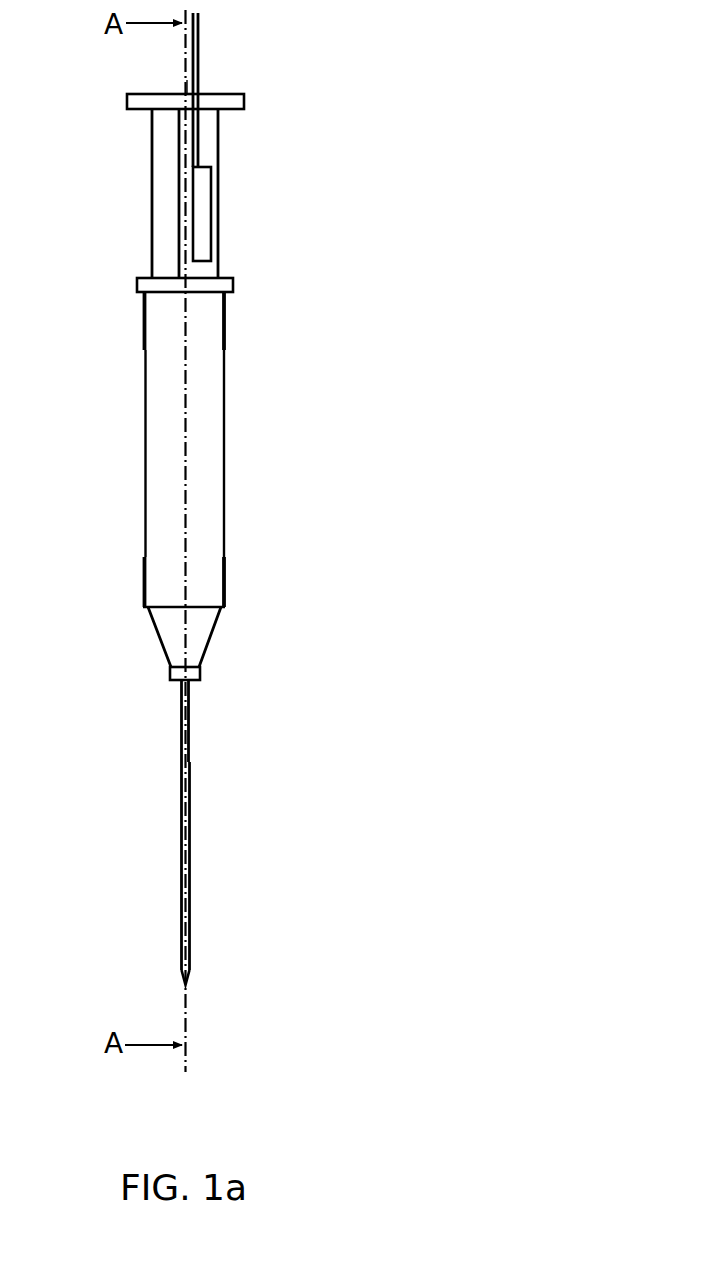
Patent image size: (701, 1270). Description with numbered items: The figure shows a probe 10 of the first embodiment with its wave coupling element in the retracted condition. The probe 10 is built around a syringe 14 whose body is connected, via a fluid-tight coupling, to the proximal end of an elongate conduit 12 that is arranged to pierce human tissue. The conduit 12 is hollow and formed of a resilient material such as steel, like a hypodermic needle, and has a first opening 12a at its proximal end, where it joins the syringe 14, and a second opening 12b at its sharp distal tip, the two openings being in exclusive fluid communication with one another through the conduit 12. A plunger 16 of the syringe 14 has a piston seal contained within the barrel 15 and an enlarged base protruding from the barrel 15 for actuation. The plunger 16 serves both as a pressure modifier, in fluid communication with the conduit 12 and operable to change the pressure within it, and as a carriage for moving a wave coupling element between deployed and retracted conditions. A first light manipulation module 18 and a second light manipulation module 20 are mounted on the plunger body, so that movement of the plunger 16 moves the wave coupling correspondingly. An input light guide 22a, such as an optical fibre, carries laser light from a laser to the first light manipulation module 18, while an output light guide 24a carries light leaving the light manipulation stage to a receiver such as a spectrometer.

The probe 10 is at (318, 169).
The elongate conduit 12 is at (148, 843).
The first opening 12a is at (182, 683).
The second opening 12b is at (183, 981).
The syringe 14 is at (234, 460).
The barrel 15 is at (202, 541).
The plunger 16 is at (220, 145).
The first light manipulation module 18 is at (264, 214).
The second light manipulation module 20 is at (208, 226).
The input light guide 22a is at (188, 86).
The output light guide 24a is at (198, 66).